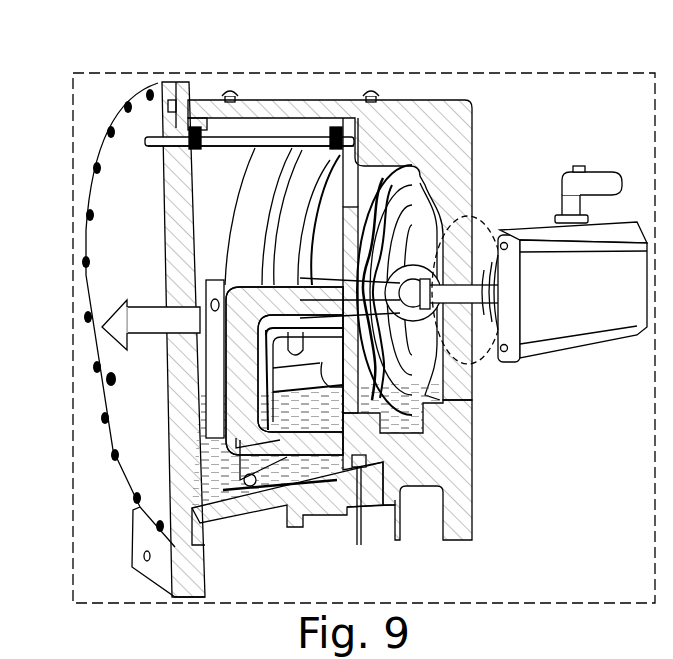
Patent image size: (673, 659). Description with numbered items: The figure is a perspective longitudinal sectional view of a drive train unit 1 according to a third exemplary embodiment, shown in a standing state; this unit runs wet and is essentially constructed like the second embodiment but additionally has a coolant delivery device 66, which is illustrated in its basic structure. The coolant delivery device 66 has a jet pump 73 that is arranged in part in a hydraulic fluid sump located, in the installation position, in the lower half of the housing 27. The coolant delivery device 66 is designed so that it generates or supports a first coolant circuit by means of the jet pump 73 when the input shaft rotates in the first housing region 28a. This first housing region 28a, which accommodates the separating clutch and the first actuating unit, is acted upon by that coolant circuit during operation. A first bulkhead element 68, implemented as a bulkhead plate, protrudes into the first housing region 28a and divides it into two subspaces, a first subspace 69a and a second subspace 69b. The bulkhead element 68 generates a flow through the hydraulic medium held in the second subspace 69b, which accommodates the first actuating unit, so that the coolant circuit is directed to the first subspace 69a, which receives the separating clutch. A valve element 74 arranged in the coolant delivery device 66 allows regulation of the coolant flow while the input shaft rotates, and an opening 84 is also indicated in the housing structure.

The drive train unit 1 is at (156, 68).
The housing 27 is at (333, 100).
The first housing region 28a is at (456, 93).
The coolant delivery device 66 is at (332, 494).
The first bulkhead element 68 is at (380, 245).
The first subspace 69a is at (430, 100).
The second subspace 69b is at (289, 100).
The jet pump 73 is at (220, 297).
The valve element 74 is at (387, 513).
The opening 84 is at (440, 440).